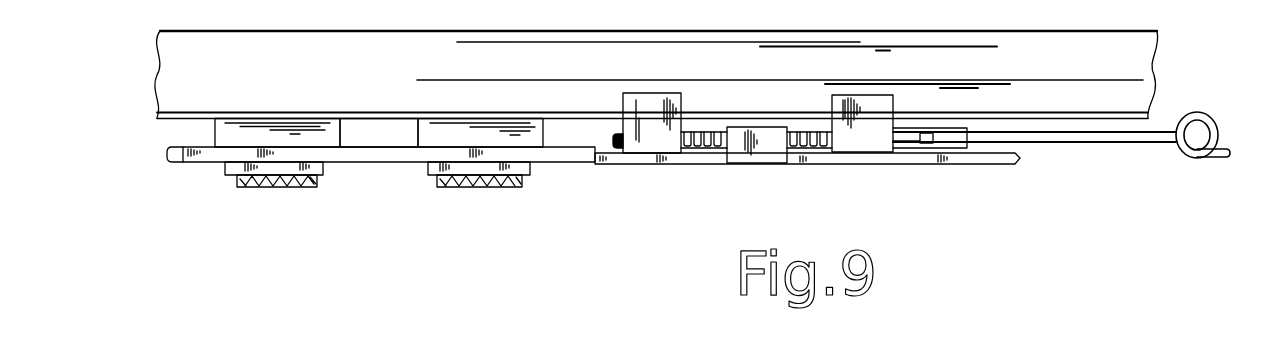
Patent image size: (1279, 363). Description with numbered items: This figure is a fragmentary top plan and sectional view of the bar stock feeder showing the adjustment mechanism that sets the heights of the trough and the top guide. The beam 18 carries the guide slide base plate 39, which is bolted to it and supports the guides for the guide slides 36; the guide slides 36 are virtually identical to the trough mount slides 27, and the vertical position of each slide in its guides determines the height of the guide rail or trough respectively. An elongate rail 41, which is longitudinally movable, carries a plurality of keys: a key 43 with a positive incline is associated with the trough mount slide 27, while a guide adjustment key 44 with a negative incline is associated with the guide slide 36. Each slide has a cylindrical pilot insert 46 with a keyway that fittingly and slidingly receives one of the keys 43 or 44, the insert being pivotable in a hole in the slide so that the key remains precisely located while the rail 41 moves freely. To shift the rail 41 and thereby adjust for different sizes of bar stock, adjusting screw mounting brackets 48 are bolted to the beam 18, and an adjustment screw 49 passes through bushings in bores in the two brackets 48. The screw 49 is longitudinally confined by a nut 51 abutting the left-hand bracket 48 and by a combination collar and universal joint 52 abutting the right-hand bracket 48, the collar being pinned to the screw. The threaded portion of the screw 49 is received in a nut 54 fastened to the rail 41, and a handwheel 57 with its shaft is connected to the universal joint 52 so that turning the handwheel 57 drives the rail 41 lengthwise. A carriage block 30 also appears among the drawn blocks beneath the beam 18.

The beam 18 is at (351, 31).
The guide slide base plate 39 is at (215, 131).
The rail 41 is at (199, 163).
The guide adjustment key 44 is at (322, 164).
The guide slide 36 is at (250, 188).
The cylindrical pilot insert 46 is at (281, 188).
The key 43 is at (426, 164).
The trough mount slide 27 is at (517, 188).
The carriage block 30 is at (543, 140).
The nut 51 is at (614, 143).
The adjusting screw mounting bracket 48 is at (652, 144).
The adjustment screw 49 is at (756, 167).
The nut 54 is at (735, 157).
The combination collar and universal joint 52 is at (923, 144).
The handwheel 57 is at (1221, 96).